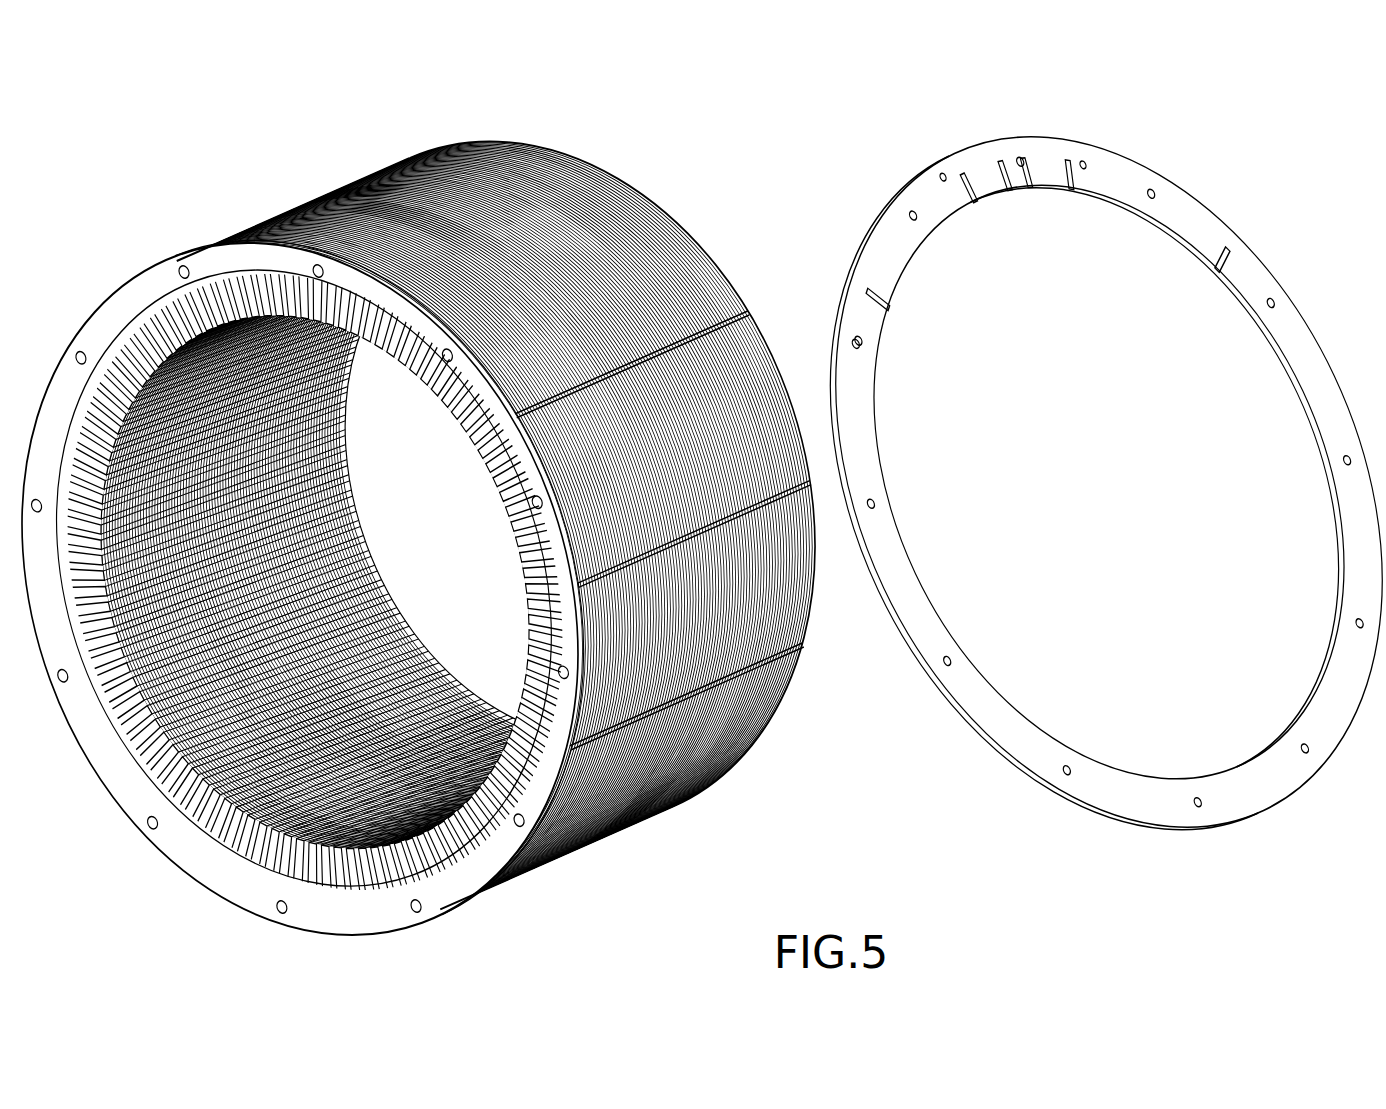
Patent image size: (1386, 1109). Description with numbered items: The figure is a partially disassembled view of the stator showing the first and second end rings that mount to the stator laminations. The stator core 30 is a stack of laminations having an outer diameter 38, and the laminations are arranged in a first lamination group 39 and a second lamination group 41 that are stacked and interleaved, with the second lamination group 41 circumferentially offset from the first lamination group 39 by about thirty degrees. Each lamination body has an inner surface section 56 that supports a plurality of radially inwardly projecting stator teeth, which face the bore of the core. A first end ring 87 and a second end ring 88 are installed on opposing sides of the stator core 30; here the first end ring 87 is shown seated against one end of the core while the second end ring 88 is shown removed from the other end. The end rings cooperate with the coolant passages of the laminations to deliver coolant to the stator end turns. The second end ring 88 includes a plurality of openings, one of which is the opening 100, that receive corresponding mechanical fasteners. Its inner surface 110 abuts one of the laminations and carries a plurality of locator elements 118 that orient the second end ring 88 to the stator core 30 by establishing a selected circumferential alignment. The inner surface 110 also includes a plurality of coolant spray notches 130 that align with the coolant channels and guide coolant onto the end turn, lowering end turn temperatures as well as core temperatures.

The stator core 30 is at (757, 769).
The outer diameter 38 is at (765, 615).
The first lamination group 39 is at (475, 331).
The second lamination group 41 is at (340, 237).
The inner surface section 56 is at (312, 486).
The first end ring 87 is at (96, 263).
The second end ring 88 is at (1000, 790).
The opening 100 is at (850, 338).
The inner surface 110 is at (858, 448).
The locator element 118 is at (938, 172).
The coolant spray notch 130 is at (1003, 185).